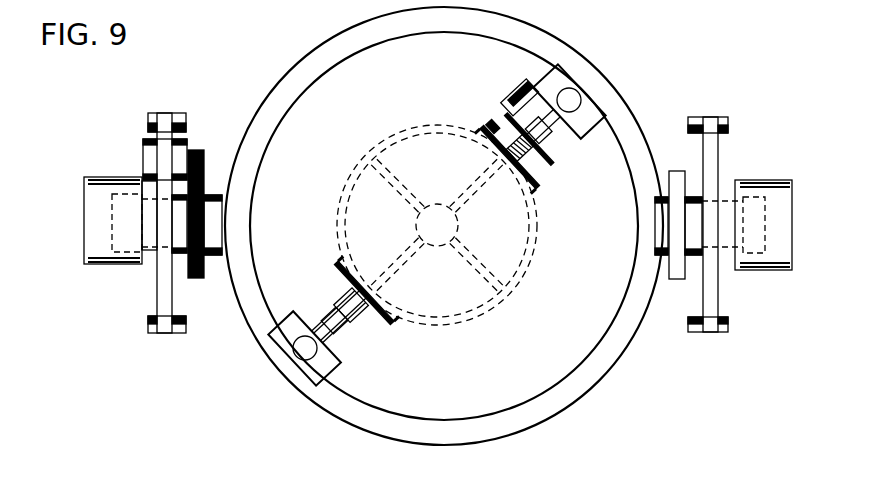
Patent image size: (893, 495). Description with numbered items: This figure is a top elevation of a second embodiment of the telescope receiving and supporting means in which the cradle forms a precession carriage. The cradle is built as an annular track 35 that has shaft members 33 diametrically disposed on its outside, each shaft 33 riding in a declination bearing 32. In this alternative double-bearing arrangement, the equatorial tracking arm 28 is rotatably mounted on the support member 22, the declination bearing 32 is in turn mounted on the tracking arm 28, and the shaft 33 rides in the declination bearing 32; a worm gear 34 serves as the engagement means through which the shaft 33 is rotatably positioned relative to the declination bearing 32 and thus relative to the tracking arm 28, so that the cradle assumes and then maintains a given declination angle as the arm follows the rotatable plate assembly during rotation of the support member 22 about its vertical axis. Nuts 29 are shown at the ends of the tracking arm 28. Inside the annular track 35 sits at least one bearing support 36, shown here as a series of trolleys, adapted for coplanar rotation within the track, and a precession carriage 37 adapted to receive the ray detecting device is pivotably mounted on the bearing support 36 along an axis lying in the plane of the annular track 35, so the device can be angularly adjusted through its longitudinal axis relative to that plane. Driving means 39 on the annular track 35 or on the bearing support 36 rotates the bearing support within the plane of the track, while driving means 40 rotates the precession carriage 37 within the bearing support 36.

The support member 22 is at (95, 195).
The equatorial tracking arm 28 is at (155, 290).
The nuts 29 is at (435, 219).
The declination bearing 32 is at (757, 130).
The shaft 33 is at (217, 193).
The worm gear 34 is at (198, 147).
The annular track 35 is at (302, 382).
The bearing support 36 is at (582, 118).
The precession carriage 37 is at (362, 320).
The driving means 39 is at (570, 100).
The driving means 40 is at (545, 78).